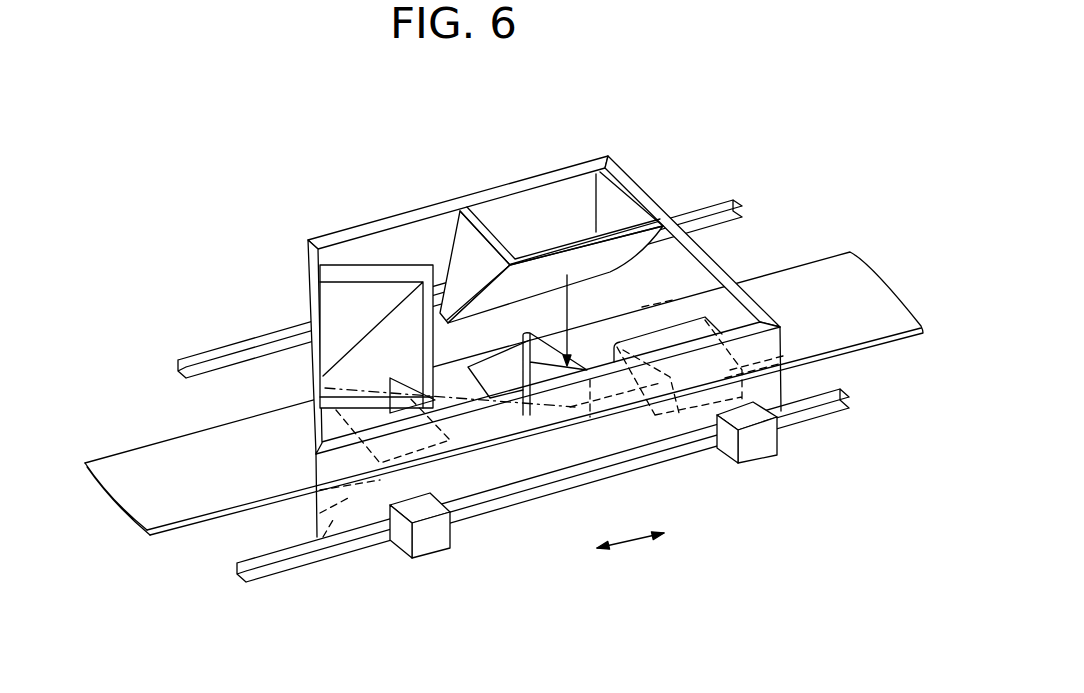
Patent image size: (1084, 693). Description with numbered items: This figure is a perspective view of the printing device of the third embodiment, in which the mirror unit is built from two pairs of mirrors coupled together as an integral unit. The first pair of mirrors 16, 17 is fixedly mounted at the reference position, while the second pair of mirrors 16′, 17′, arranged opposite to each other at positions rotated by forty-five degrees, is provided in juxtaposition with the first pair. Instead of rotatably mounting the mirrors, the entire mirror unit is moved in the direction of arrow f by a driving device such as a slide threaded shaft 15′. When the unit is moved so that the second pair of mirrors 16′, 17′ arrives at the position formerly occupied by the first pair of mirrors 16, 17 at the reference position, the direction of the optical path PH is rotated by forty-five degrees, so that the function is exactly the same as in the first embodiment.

The slide threaded shaft 15′ is at (288, 562).
The mirror 16 is at (699, 327).
The mirror 16′ is at (545, 372).
The mirror 17 is at (560, 243).
The mirror 17′ is at (385, 333).
The optical path PH is at (490, 395).
The arrow (direction of movement) f is at (630, 554).